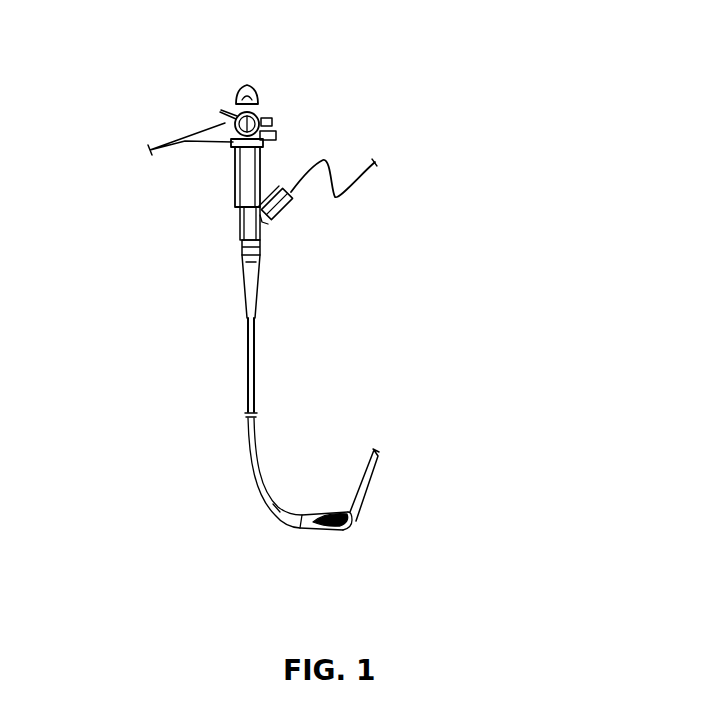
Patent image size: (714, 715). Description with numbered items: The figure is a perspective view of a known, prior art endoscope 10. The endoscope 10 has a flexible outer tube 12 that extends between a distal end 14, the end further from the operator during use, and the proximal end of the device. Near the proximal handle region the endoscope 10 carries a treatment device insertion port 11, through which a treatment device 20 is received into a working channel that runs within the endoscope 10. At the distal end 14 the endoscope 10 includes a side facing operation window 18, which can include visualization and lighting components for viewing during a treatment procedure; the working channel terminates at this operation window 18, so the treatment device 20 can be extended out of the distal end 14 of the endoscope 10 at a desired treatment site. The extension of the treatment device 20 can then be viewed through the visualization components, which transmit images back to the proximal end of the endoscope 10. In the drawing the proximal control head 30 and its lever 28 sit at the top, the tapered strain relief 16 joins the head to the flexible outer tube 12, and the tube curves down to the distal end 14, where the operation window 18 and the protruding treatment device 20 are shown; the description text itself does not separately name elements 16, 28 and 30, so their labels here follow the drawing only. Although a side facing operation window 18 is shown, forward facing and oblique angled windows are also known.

The endoscope 10 is at (528, 250).
The treatment device insertion port 11 is at (291, 211).
The flexible outer tube 12 is at (247, 391).
The distal end 14 is at (297, 528).
The strain relief 16 is at (247, 310).
The side facing operation window 18 is at (347, 528).
The treatment device 20 is at (372, 458).
The lever 28 is at (237, 162).
The control head 30 is at (235, 90).